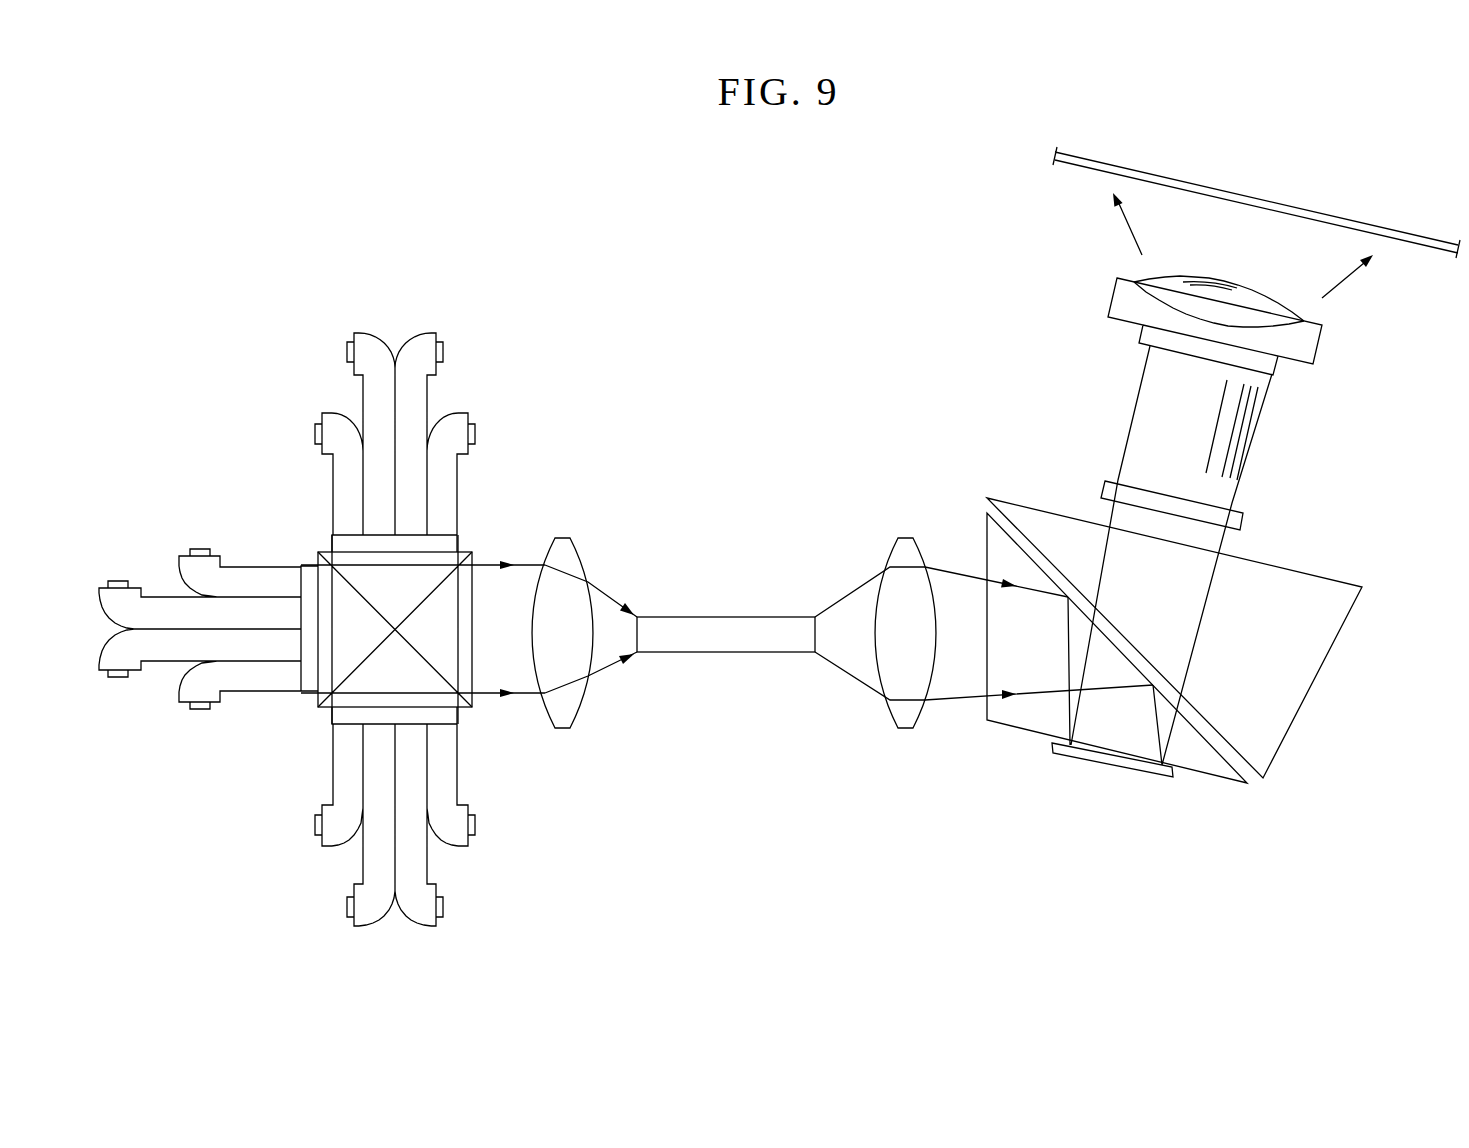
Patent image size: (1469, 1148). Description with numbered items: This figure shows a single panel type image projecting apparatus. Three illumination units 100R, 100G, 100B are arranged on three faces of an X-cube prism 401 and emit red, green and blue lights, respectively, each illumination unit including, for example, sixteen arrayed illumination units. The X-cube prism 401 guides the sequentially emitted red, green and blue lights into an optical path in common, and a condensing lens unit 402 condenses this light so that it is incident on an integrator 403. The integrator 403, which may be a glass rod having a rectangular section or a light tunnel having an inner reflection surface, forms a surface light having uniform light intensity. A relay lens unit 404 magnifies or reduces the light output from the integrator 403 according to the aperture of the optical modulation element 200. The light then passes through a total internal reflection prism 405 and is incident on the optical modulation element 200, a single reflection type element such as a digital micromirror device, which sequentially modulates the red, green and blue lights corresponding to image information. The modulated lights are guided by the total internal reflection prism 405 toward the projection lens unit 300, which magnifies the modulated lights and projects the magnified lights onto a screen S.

The illumination unit 100B is at (332, 493).
The illumination unit 100G is at (262, 693).
The illumination unit 100R is at (458, 767).
The X-cube prism 401 is at (472, 595).
The condensing lens unit 402 is at (562, 535).
The integrator 403 is at (727, 617).
The relay lens unit 404 is at (907, 537).
The total internal reflection (TIR) prism 405 is at (1313, 683).
The optical modulation element 200 is at (1112, 768).
The projection lens unit 300 is at (1312, 392).
The screen S is at (1267, 203).